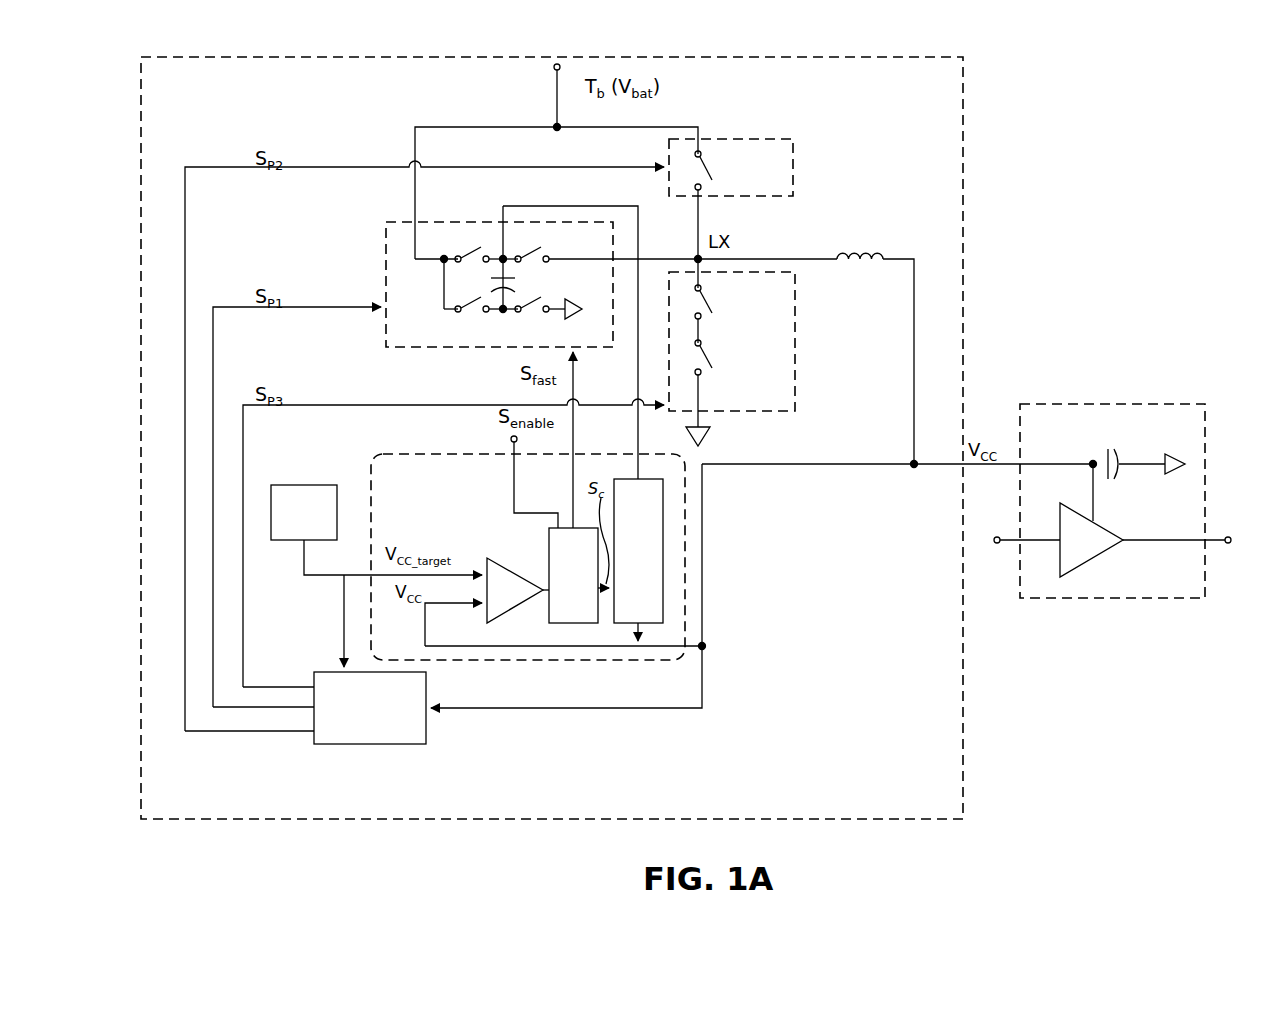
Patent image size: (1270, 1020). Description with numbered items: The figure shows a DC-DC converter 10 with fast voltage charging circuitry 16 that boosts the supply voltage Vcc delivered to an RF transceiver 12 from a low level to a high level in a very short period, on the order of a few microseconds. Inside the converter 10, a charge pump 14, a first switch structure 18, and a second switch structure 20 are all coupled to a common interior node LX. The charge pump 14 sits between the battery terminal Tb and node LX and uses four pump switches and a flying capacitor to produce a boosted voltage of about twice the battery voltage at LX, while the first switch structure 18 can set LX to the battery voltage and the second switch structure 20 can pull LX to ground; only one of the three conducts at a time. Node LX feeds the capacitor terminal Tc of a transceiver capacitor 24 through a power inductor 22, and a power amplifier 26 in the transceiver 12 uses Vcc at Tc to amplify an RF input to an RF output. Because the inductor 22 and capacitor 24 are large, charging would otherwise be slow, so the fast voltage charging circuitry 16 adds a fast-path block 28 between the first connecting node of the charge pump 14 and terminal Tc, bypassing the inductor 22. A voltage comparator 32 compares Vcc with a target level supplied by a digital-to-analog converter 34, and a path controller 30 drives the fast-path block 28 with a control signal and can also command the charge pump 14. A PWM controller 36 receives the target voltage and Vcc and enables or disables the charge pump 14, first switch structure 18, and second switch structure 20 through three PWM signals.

The DC-DC converter 10 is at (552, 438).
The RF transceiver 12 is at (1114, 501).
The charge pump 14 is at (412, 222).
The fast voltage charging circuitry 16 is at (528, 557).
The first switch structure 18 is at (718, 139).
The second switch structure 20 is at (797, 386).
The power inductor 22 is at (860, 250).
The transceiver capacitor 24 is at (1117, 450).
The power amplifier 26 is at (1105, 528).
The fast-path block 28 is at (663, 528).
The path controller 30 is at (573, 623).
The voltage comparator 32 is at (505, 616).
The digital-to-analog converter 34 is at (304, 485).
The pulse-width modulation controller 36 is at (355, 745).